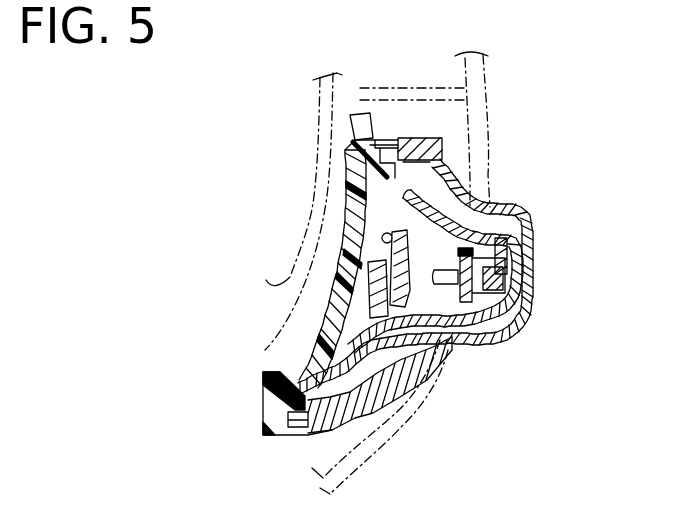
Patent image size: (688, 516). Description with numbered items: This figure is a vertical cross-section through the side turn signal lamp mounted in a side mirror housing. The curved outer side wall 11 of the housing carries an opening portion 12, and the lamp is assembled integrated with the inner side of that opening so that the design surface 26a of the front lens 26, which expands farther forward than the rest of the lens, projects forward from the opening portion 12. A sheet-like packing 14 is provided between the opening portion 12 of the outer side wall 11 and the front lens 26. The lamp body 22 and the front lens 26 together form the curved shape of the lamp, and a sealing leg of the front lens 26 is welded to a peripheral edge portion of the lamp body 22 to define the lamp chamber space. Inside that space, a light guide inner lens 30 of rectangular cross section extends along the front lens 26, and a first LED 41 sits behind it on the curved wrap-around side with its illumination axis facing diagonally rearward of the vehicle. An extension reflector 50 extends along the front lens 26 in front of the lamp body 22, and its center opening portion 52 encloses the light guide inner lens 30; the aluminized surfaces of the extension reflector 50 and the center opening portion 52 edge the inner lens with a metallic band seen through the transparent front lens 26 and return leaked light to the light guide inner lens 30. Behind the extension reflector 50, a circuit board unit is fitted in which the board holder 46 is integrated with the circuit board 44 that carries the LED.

The outer side wall 11 is at (488, 86).
The opening portion 12 is at (498, 208).
The sheet-like packing 14 is at (455, 140).
The lamp body 22 is at (343, 245).
The front lens 26 is at (533, 230).
The design surface 26a is at (523, 303).
The light guide inner lens 30 is at (503, 282).
The first LED 41 is at (497, 270).
The circuit board 44 is at (460, 247).
The board holder 46 is at (373, 290).
The extension reflector 50 is at (453, 333).
The center opening portion 52 is at (520, 310).